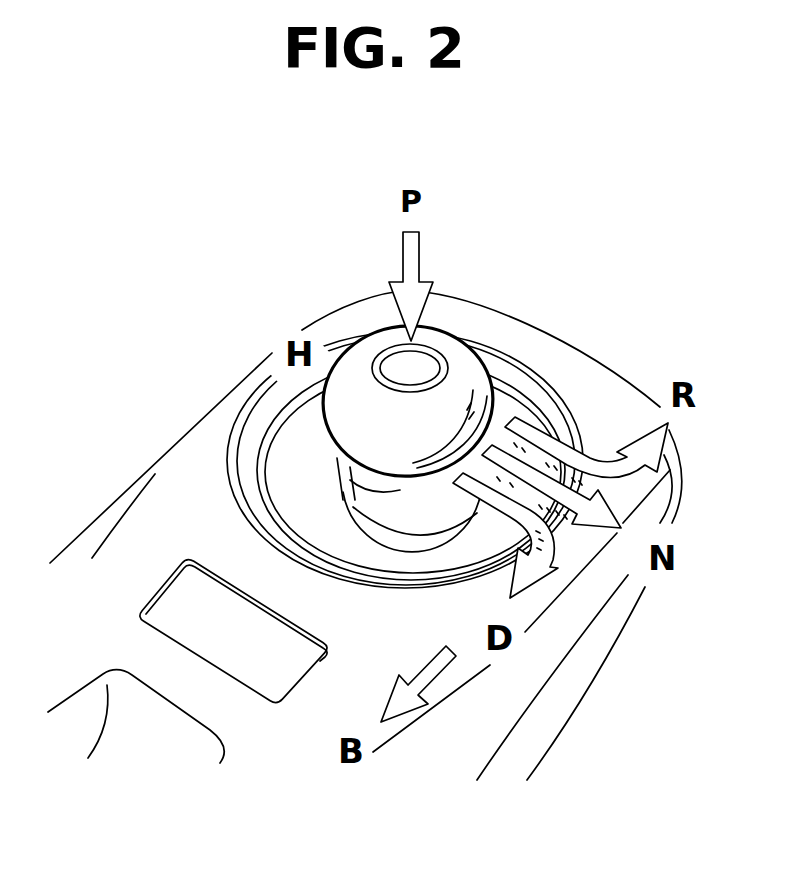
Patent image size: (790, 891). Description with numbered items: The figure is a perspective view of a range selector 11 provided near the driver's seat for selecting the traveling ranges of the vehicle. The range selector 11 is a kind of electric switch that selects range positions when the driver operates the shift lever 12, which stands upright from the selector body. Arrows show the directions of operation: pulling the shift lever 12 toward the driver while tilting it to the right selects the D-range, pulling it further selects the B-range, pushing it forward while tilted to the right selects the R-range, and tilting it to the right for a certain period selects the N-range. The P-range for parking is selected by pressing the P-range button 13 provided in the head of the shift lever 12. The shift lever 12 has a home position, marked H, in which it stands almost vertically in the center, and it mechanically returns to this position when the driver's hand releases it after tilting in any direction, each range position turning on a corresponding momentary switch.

The range selector 11 is at (517, 350).
The shift lever 12 is at (442, 342).
The P-range button 13 is at (393, 358).